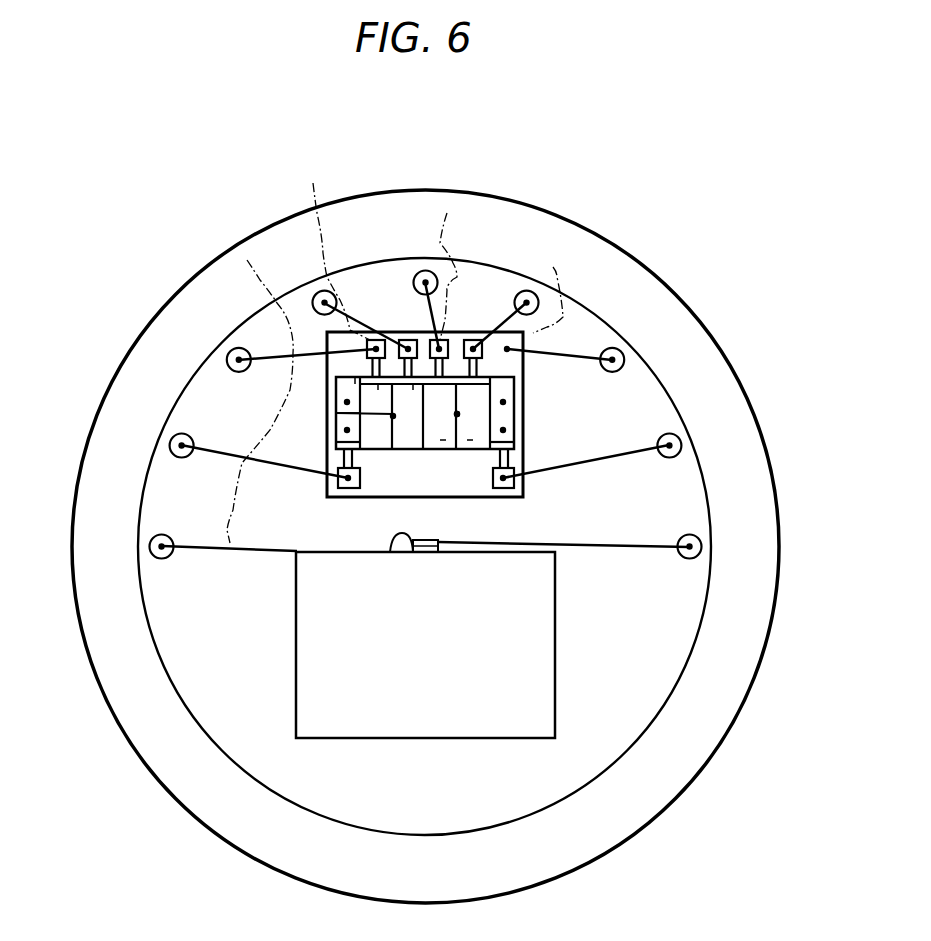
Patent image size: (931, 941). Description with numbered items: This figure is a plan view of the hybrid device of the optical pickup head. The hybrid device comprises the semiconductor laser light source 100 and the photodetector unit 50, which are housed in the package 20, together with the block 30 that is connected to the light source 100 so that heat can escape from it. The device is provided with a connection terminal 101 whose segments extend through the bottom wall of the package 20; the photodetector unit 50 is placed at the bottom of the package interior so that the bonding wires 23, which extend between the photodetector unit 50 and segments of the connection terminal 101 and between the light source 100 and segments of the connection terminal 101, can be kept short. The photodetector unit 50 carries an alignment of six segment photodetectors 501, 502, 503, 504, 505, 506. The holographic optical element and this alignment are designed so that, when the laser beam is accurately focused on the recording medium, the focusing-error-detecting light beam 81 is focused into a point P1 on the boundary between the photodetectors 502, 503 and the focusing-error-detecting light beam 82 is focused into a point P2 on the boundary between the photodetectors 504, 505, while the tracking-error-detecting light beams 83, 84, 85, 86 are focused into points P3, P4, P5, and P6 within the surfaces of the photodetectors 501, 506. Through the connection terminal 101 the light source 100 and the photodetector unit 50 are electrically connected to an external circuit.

The package 20 is at (740, 712).
The block 30 is at (458, 740).
The semiconductor laser light source 100 is at (393, 552).
The connection terminal 101 is at (430, 268).
The photodetector unit 50 is at (523, 472).
The focusing-error-detecting light beam 81 is at (347, 402).
The focusing-error-detecting light beam 82 is at (457, 414).
The tracking-error-detecting light beam 83 is at (340, 392).
The tracking-error-detecting light beam 84 is at (347, 430).
The tracking-error-detecting light beam 85 is at (503, 402).
The tracking-error-detecting light beam 86 is at (503, 430).
The photodetector 501 is at (355, 383).
The photodetector 502 is at (378, 388).
The photodetector 503 is at (413, 390).
The photodetector 504 is at (443, 440).
The photodetector 505 is at (470, 440).
The photodetector 506 is at (525, 410).
The bonding wires 23 is at (600, 575).